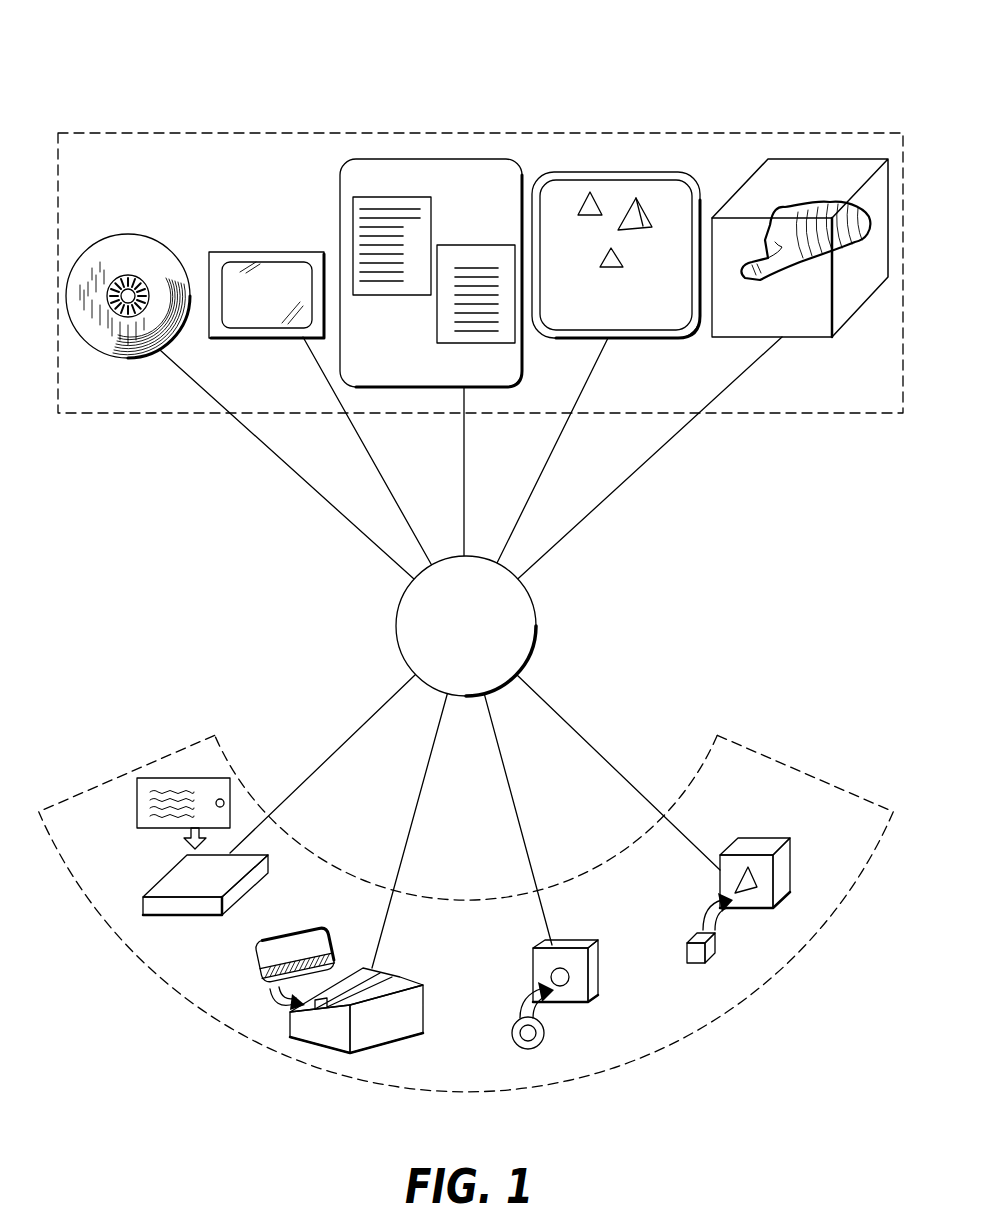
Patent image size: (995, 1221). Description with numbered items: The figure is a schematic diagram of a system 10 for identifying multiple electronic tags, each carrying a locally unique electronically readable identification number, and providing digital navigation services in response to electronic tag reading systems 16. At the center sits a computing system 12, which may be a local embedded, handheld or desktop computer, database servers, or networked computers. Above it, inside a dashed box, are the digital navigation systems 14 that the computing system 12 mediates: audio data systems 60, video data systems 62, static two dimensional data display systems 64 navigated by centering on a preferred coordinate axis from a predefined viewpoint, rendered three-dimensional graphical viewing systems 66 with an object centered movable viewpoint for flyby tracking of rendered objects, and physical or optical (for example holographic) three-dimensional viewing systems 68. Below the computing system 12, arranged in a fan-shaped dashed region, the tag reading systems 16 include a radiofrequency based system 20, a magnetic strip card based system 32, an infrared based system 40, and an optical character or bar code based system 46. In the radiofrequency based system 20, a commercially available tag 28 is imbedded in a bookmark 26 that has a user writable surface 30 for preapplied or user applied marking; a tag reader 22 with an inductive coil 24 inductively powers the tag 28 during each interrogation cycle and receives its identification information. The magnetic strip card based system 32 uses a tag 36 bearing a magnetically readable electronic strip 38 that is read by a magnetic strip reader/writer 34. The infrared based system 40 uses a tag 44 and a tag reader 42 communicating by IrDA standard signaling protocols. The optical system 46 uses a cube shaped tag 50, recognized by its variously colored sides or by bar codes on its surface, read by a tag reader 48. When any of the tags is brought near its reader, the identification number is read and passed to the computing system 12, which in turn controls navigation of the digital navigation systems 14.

The system 10 is at (196, 56).
The computing system 12 is at (396, 625).
The digital navigation systems 14 is at (198, 132).
The electronic tag reading systems 16 is at (778, 756).
The radiofrequency based system 20 is at (158, 950).
The tag reader 22 is at (194, 898).
The inductive coil 24 is at (196, 876).
The bookmark 26 is at (172, 772).
The tag 28 is at (225, 798).
The user writable surface 30 is at (148, 808).
The magnetic strip card based system 32 is at (288, 1046).
The magnetic strip reader/writer 34 is at (370, 1043).
The tag 36 is at (312, 954).
The magnetically readable electronic strip 38 is at (297, 965).
The infrared based system 40 is at (624, 1035).
The tag reader 42 is at (572, 946).
The tag 44 is at (545, 1034).
The optical character/bar code based system 46 is at (789, 915).
The tag reader 48 is at (755, 840).
The cube shaped tag 50 is at (710, 958).
The audio data systems 60 is at (135, 233).
The video data systems 62 is at (245, 252).
The static two dimensional data display systems 64 is at (408, 158).
The rendered 3-dimensional graphical viewing systems 66 is at (612, 180).
The 3-dimensional viewing systems 68 is at (753, 183).